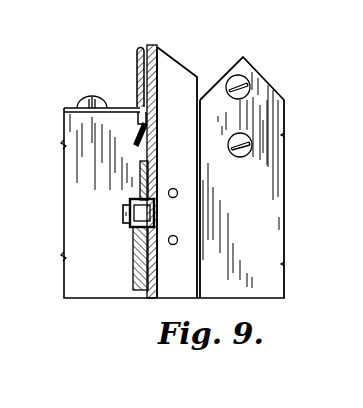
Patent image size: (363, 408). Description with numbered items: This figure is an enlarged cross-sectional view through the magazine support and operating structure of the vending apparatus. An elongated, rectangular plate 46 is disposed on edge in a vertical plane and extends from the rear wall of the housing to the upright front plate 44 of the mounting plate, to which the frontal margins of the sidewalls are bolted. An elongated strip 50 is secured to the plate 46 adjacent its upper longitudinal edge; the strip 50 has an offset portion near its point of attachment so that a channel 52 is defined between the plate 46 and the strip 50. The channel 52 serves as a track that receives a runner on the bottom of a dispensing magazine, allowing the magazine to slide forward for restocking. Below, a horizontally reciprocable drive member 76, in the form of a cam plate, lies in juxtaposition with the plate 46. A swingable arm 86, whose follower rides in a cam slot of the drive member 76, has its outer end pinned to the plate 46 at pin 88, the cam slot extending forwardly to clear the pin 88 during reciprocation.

The front plate section 44 is at (270, 178).
The plate 46 is at (160, 63).
The strip 50 is at (137, 62).
The channel 52 is at (151, 44).
The drive member 76 is at (173, 197).
The swingable arm 86 is at (135, 189).
The pin 88 is at (154, 222).